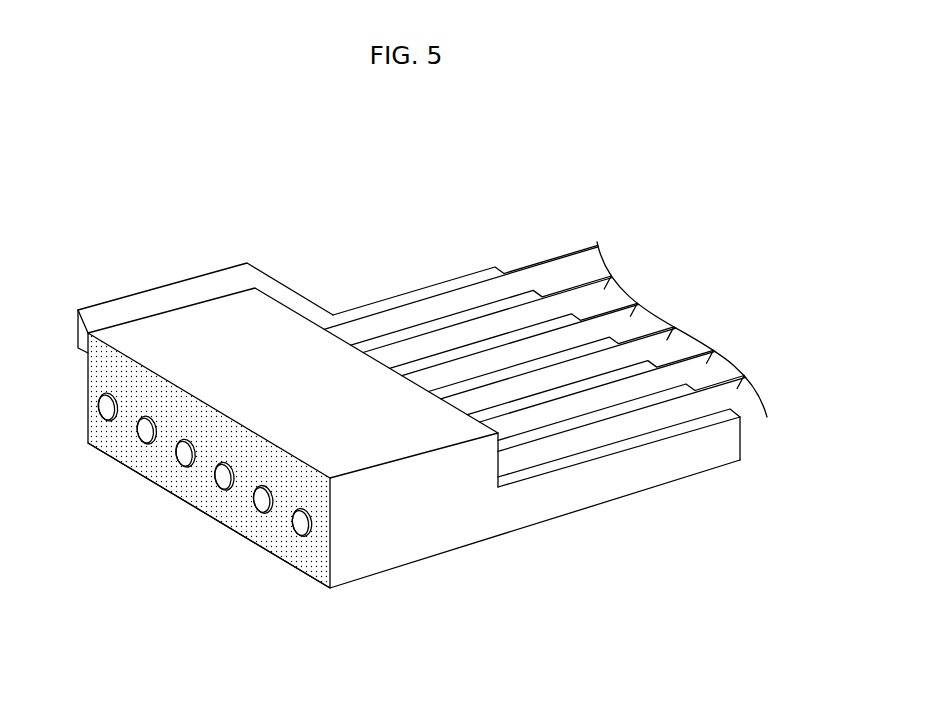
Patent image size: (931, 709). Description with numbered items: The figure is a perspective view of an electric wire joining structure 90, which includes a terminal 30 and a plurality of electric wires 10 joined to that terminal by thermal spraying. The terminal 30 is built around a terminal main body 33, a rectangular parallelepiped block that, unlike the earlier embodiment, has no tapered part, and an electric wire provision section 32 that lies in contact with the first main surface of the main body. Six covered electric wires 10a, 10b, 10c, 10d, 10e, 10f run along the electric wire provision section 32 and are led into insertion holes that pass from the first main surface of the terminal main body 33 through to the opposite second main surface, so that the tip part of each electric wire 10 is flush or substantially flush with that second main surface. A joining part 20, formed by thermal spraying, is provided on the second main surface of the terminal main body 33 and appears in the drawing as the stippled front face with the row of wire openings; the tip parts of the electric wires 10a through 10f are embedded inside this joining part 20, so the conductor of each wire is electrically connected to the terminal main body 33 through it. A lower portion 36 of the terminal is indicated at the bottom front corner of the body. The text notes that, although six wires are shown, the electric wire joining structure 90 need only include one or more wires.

The electric wire joining structure 90 is at (462, 129).
The terminal 30 is at (457, 186).
The terminal main body 33 is at (203, 322).
The joining part 20 is at (100, 377).
The electric wire provision section 32 is at (670, 432).
The bottom portion of housing 36 is at (332, 548).
The electric wire 10 is at (850, 170).
The electric wire 10a is at (597, 242).
The electric wire 10b is at (613, 277).
The electric wire 10c is at (641, 308).
The electric wire 10d is at (685, 332).
The electric wire 10e is at (723, 357).
The electric wire 10f is at (750, 383).